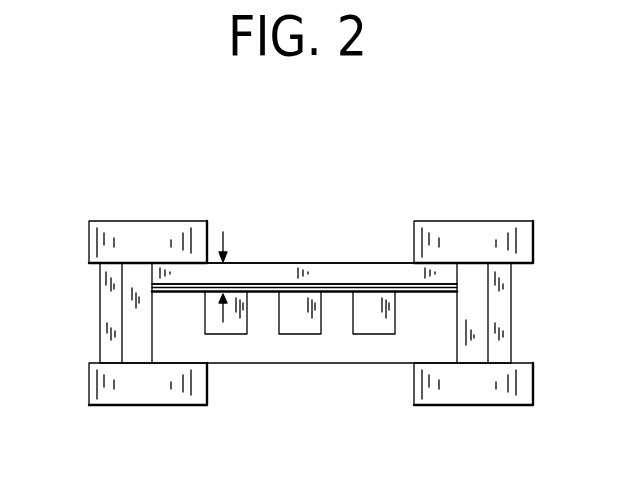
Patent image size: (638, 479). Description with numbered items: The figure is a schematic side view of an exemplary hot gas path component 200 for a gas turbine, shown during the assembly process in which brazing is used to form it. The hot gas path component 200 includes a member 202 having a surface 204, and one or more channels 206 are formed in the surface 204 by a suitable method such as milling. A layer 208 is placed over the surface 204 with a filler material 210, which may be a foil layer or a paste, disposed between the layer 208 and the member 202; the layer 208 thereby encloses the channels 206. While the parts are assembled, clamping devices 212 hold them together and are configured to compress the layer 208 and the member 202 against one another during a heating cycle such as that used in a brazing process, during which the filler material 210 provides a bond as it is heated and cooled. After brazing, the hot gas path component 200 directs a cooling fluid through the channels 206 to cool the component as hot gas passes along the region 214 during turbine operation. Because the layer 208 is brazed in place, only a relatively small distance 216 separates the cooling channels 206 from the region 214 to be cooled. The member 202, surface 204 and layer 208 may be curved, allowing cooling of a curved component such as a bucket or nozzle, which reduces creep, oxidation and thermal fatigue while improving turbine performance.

The hot gas path component 200 is at (364, 226).
The member 202 is at (400, 357).
The surface 204 is at (438, 289).
The channels 206 is at (367, 322).
The layer 208 is at (275, 268).
The filler material 210 is at (163, 291).
The clamping device 212 is at (503, 221).
The region 214 is at (336, 225).
The distance 216 is at (230, 231).